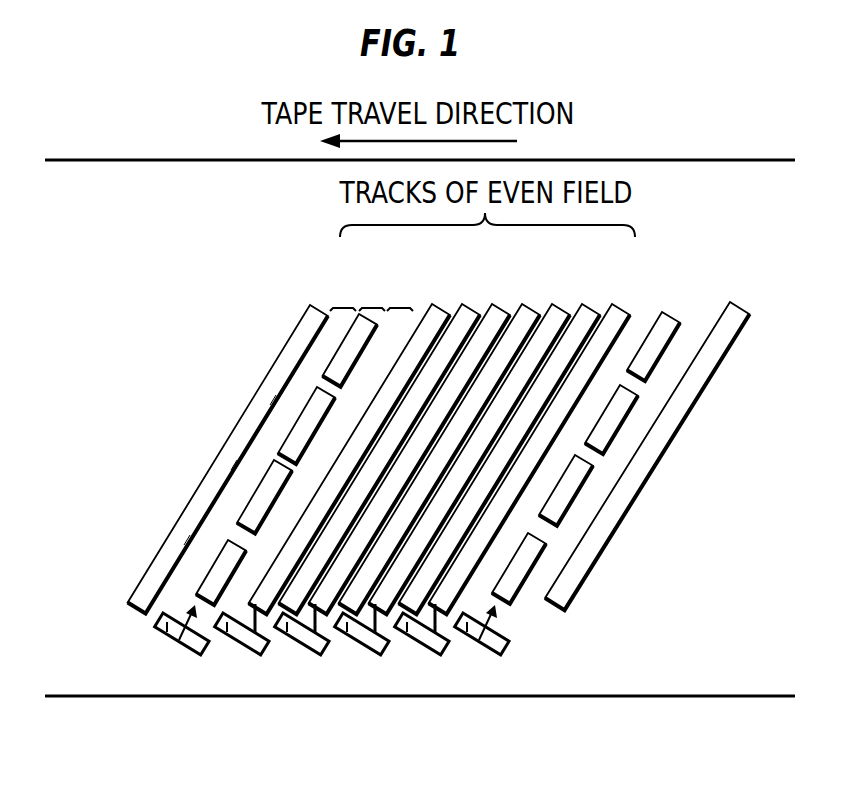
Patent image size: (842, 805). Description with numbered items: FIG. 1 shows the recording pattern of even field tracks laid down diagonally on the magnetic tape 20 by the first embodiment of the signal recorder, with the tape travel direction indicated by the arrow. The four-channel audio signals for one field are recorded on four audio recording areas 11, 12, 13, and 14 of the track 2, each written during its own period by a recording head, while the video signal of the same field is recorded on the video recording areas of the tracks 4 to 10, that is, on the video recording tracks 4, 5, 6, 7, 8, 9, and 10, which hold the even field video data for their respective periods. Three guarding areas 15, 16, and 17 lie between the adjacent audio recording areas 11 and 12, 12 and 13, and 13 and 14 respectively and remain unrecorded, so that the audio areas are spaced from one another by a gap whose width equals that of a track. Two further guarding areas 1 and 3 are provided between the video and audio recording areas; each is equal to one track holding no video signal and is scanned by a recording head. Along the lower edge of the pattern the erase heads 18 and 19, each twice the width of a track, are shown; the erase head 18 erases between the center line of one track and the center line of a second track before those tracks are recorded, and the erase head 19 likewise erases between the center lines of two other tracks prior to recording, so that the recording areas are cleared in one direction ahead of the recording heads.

The guarding area 1 is at (340, 303).
The track 2 is at (369, 303).
The guarding area 3 is at (397, 303).
The video recording track 4 is at (433, 303).
The video recording track 5 is at (463, 303).
The video recording track 6 is at (493, 303).
The video recording track 7 is at (523, 303).
The video recording track 8 is at (553, 303).
The video recording track 9 is at (583, 303).
The video recording track 10 is at (613, 303).
The audio recording area 11 is at (320, 334).
The audio recording area 12 is at (302, 423).
The audio recording area 13 is at (257, 490).
The audio recording area 14 is at (213, 563).
The guarding area 15 is at (348, 358).
The guarding area 16 is at (300, 457).
The guarding area 17 is at (237, 528).
The erase head 18 is at (165, 637).
The erase head 19 is at (225, 637).
The magnetic tape 20 is at (620, 626).